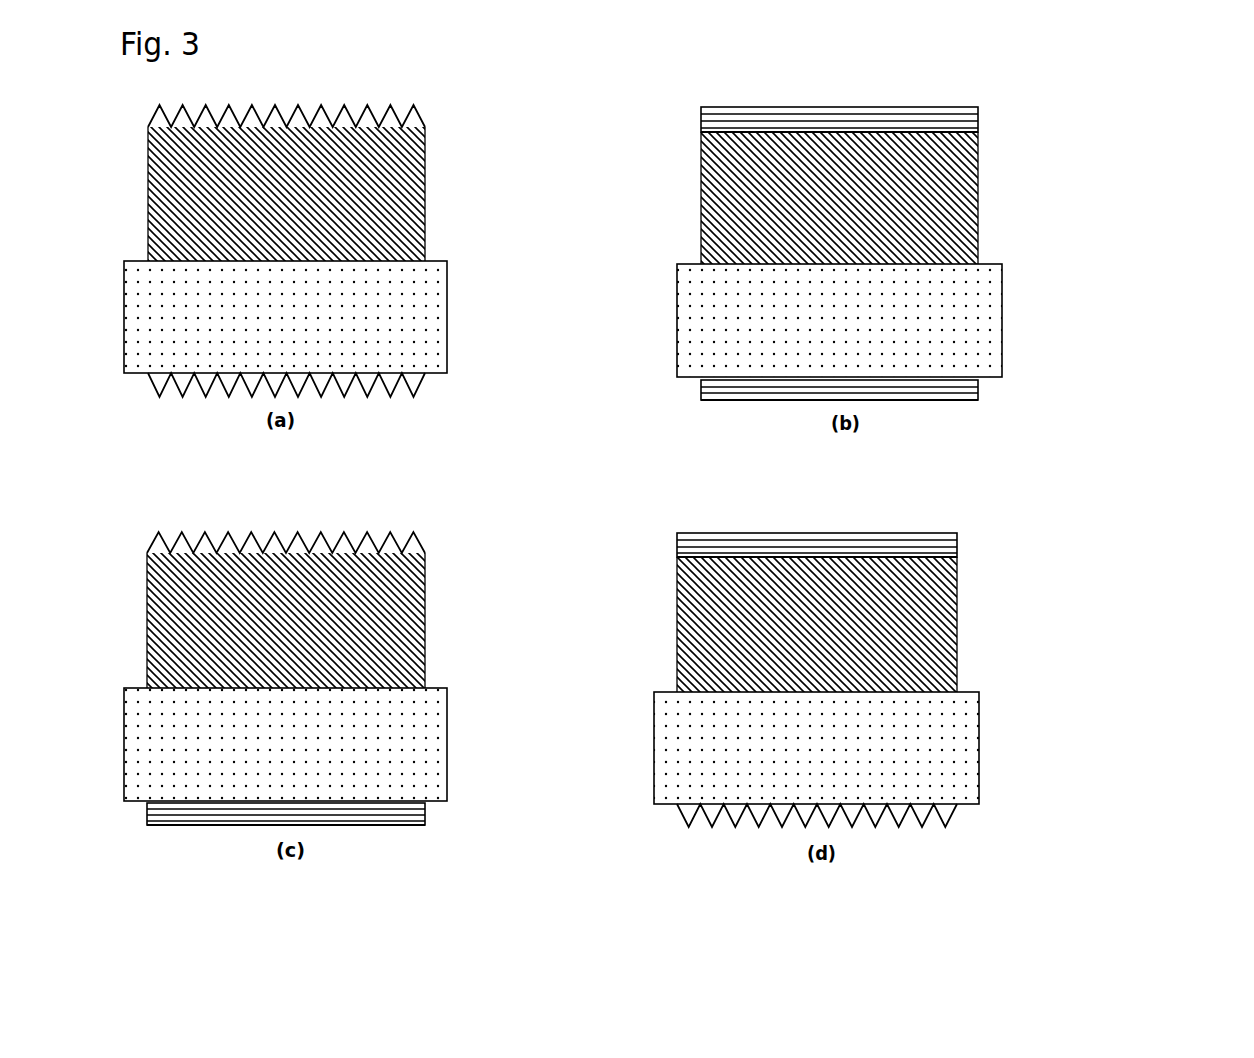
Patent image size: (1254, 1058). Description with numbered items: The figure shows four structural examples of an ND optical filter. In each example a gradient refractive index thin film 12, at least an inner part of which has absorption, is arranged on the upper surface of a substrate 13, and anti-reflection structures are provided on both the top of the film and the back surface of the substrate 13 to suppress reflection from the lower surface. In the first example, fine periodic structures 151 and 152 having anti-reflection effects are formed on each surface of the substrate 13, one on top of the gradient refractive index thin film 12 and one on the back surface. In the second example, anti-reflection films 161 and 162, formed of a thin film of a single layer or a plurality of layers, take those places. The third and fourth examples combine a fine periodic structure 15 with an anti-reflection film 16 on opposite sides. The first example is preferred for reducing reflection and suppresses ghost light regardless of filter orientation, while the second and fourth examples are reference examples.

The gradient refractive index thin film 12 is at (562, 409).
The substrate 13 is at (563, 532).
The fine periodic structure 15 is at (428, 515).
The anti-reflection film 16 is at (450, 786).
The fine periodic structure 151 is at (433, 90).
The fine periodic structure 152 is at (450, 362).
The anti-reflection film 161 is at (988, 93).
The anti-reflection film 162 is at (1005, 365).